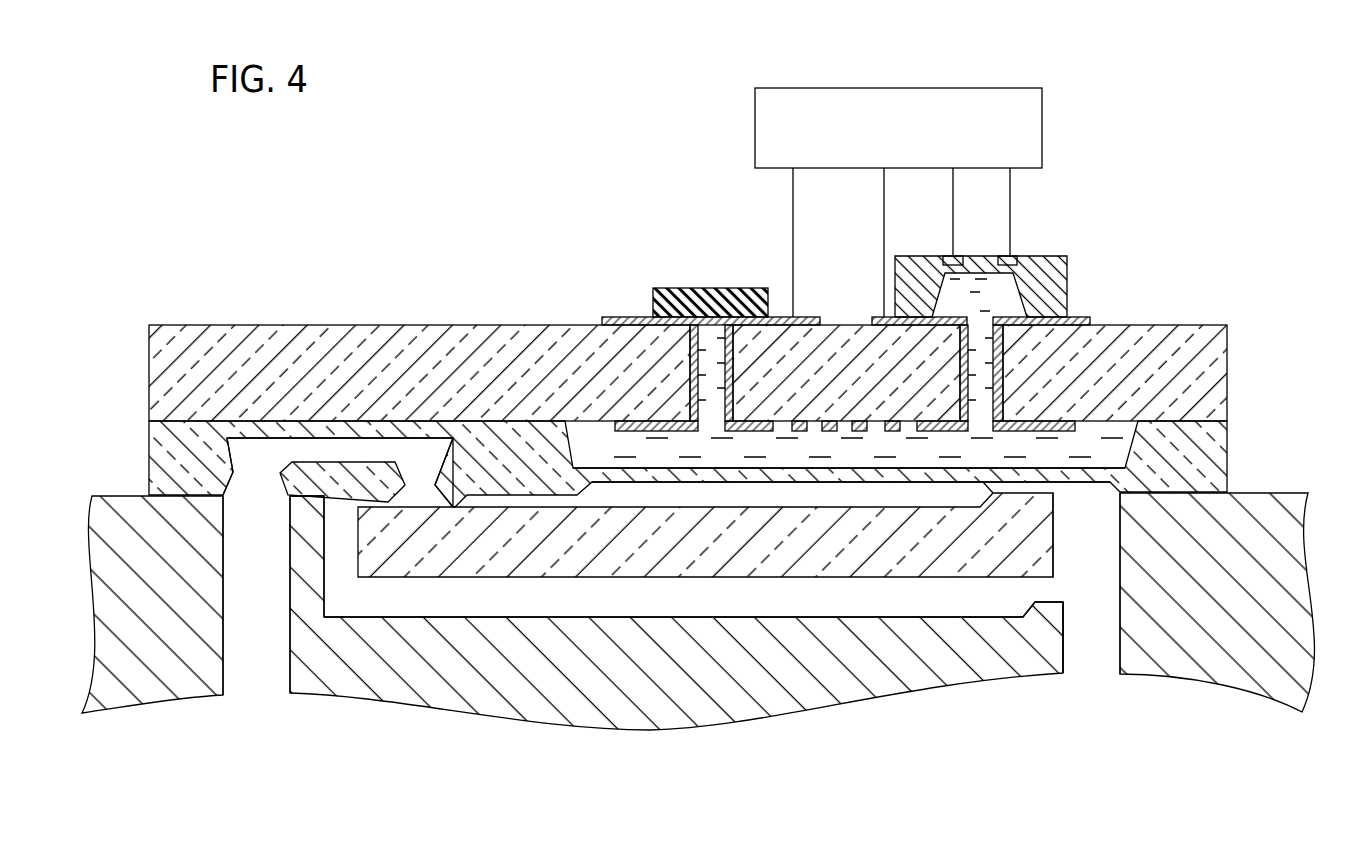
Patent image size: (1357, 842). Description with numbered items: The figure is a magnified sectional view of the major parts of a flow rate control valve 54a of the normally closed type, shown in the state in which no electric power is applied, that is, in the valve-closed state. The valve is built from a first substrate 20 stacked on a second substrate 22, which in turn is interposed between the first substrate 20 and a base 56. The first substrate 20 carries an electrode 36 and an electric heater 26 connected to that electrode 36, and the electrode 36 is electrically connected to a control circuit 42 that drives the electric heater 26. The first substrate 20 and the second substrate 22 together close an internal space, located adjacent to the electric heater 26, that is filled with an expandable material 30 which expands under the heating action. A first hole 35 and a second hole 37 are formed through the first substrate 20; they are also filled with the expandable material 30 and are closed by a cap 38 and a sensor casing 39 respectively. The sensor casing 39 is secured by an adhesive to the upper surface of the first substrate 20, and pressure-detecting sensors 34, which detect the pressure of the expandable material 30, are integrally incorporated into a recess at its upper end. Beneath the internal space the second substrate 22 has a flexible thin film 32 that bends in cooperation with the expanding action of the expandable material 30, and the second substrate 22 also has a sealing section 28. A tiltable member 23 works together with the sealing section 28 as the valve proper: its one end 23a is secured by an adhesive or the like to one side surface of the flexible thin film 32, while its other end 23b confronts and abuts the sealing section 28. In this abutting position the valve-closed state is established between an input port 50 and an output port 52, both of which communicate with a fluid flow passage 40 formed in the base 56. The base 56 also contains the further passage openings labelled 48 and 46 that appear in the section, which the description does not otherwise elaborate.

The first substrate 20 is at (1227, 343).
The second substrate 22 is at (1227, 443).
The tiltable member 23 is at (852, 565).
The one end of the tiltable member 23a is at (1022, 540).
The other end of the tiltable member 23b is at (408, 530).
The electric heater 26 is at (830, 428).
The sealing section 28 is at (452, 453).
The expandable material 30 is at (693, 386).
The flexible thin film 32 is at (773, 480).
The pressure-detecting sensors 34 is at (1012, 257).
The first hole 35 is at (600, 448).
The electrode 36 is at (628, 317).
The second hole 37 is at (990, 383).
The cap 38 is at (698, 293).
The sensor casing 39 is at (1055, 289).
The fluid flow passage 40 is at (705, 551).
The control circuit 42 is at (755, 105).
The ink passage 46 is at (1097, 617).
The ink supply passage 48 is at (257, 638).
The input port 50 is at (360, 500).
The output port 52 is at (250, 487).
The flow rate control valve of the normally closed type 54a is at (1183, 190).
The base 56 is at (1268, 489).